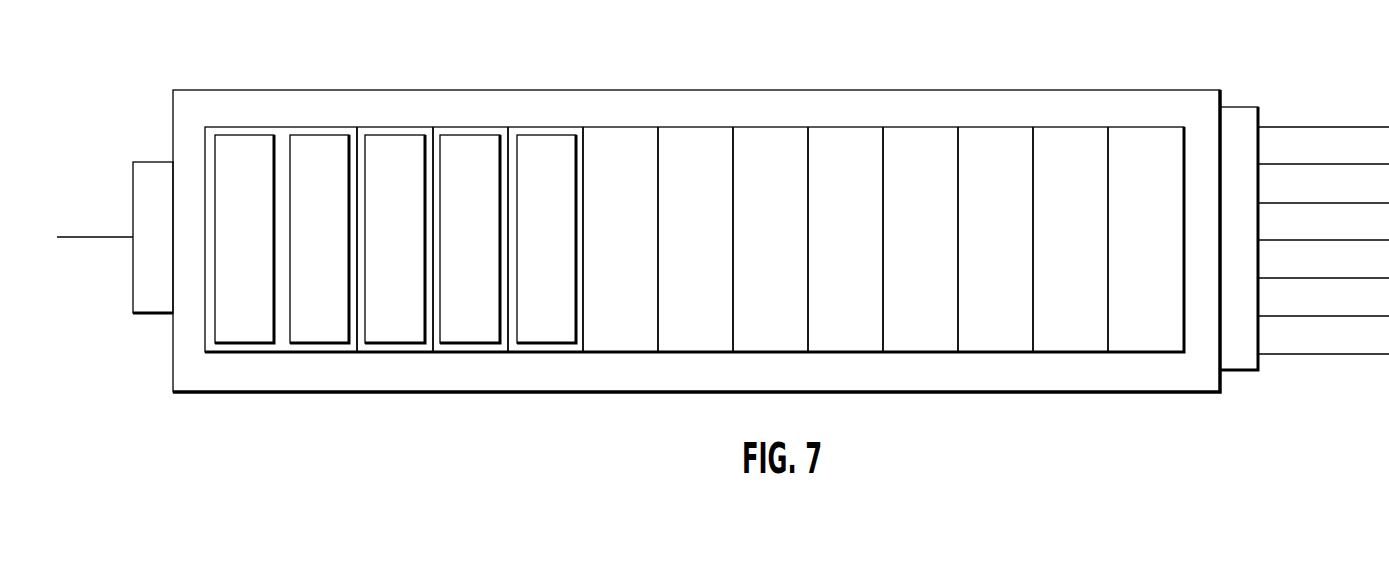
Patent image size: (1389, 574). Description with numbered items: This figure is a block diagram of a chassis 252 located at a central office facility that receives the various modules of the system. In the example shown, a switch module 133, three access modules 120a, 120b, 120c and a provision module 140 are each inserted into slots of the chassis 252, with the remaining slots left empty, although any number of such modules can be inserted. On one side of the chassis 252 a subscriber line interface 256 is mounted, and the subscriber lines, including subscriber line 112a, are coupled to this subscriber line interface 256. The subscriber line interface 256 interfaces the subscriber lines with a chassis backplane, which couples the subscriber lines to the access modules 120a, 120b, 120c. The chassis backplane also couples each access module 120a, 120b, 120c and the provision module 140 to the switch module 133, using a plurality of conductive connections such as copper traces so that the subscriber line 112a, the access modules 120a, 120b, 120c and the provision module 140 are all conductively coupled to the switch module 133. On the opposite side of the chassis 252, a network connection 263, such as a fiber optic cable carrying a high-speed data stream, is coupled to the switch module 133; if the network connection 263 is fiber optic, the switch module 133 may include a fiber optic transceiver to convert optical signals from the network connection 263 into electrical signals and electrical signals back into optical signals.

The chassis 252 is at (804, 90).
The network connection 263 is at (73, 237).
The subscriber line interface 256 is at (1240, 107).
The subscriber line 112a is at (1282, 105).
The access module 120a is at (228, 135).
The access module 120b is at (300, 135).
The access module 120c is at (378, 135).
The provision module 140 is at (455, 135).
The switch module 133 is at (530, 135).